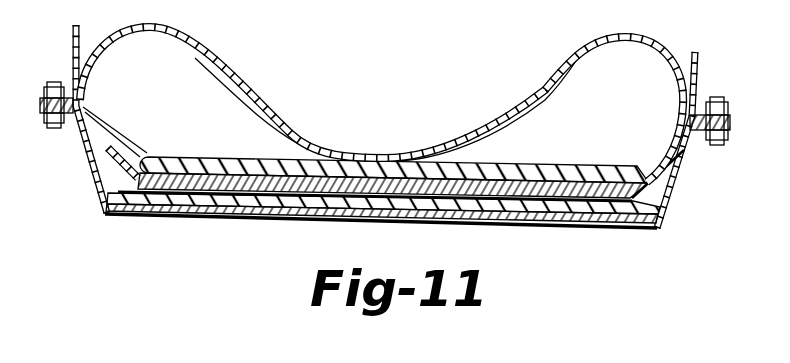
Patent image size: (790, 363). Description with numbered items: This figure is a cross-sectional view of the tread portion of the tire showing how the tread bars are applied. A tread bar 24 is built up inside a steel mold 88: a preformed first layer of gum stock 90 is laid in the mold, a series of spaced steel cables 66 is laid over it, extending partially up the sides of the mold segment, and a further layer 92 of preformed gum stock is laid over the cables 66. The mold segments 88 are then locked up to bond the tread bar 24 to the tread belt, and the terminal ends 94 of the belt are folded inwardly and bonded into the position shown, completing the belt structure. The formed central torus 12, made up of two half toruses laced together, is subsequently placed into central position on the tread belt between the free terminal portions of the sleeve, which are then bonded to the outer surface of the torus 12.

The central torus 12 is at (225, 83).
The tread bar 24 is at (243, 206).
The steel cables 66 is at (587, 206).
The steel mold 88 is at (101, 207).
The first layer of gum stock 90 is at (188, 203).
The further layer of preformed gum stock 92 is at (667, 186).
The terminal ends of the belt 94 is at (262, 117).